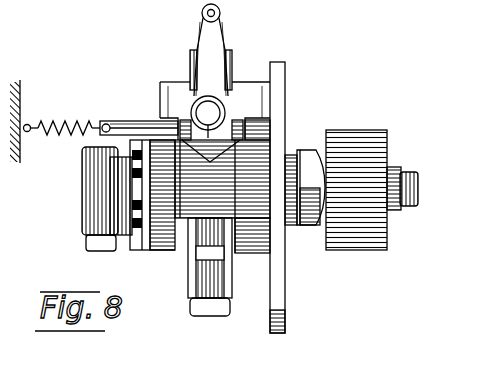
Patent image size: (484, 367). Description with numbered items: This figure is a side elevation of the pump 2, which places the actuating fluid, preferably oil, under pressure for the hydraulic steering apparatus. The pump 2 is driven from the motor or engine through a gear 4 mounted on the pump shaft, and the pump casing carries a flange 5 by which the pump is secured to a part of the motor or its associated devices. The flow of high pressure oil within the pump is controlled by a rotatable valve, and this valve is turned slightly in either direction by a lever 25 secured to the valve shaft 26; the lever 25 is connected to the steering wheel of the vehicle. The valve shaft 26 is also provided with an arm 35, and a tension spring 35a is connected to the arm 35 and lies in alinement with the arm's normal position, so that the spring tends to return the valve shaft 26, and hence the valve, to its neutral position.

The pump 2 is at (252, 162).
The gear 4 is at (372, 130).
The flange 5 is at (282, 292).
The lever 25 is at (214, 40).
The valve shaft 26 is at (200, 108).
The arm 35 is at (128, 121).
The tension spring 35a is at (48, 128).